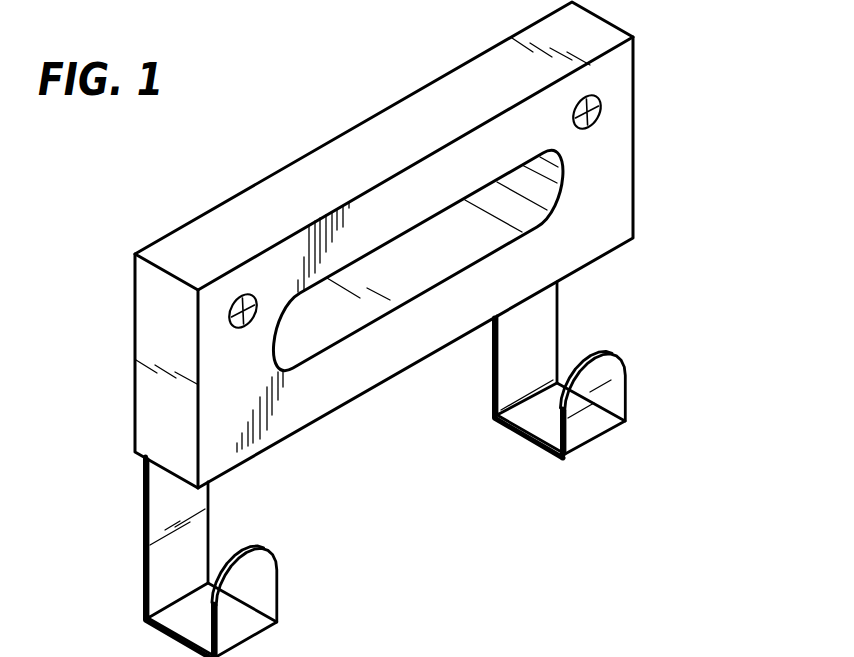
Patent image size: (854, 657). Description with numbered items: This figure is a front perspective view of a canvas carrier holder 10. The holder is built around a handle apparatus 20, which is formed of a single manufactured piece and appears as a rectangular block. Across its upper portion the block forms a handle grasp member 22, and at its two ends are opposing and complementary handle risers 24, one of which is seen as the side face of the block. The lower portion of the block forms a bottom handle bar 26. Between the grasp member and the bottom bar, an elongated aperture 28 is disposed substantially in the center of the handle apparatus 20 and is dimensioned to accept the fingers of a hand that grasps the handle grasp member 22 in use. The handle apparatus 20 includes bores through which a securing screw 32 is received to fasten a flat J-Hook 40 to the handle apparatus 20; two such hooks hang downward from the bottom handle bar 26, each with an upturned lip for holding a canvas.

The canvas carrier holder 10 is at (682, 169).
The handle apparatus 20 is at (165, 240).
The handle grasp member 22 is at (424, 178).
The handle risers 24 is at (145, 391).
The bottom handle bar 26 is at (350, 367).
The aperture 28 is at (442, 262).
The securing screw 32 is at (596, 98).
The flat J-Hook 40 is at (140, 563).